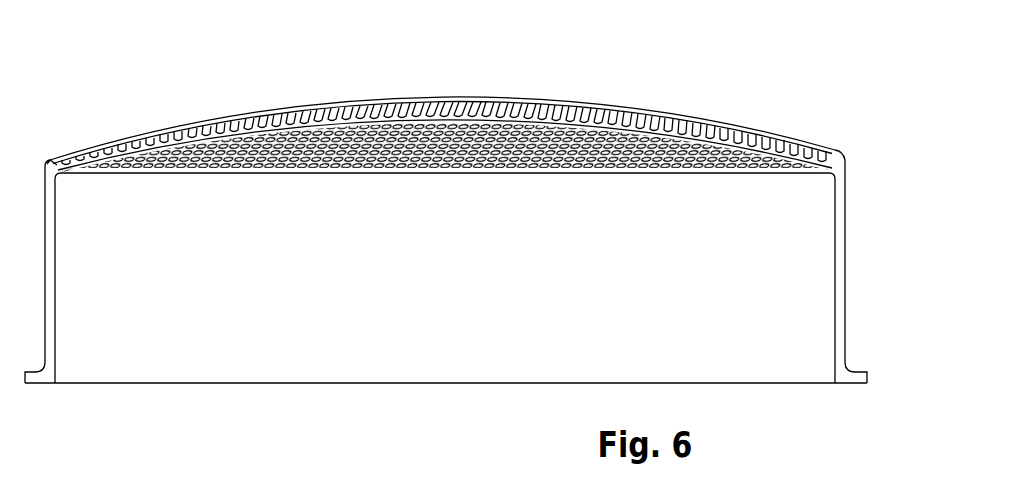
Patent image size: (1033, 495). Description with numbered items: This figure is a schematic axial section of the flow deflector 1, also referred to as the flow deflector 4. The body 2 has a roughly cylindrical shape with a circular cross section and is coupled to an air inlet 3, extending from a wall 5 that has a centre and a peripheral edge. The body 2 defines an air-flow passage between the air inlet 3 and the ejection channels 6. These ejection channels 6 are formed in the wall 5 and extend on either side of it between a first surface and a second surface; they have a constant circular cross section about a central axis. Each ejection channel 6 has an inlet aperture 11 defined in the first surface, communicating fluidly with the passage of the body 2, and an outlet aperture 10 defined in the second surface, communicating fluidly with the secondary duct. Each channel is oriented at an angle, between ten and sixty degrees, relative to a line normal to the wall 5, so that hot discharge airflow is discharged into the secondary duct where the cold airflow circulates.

The flow deflector 1 is at (650, 62).
The body 2 is at (840, 250).
The air inlet 3 is at (466, 388).
The flow deflector 4 is at (513, 98).
The wall 5 is at (50, 155).
The ejection channels 6 is at (771, 130).
The outlet aperture 10 is at (88, 150).
The inlet aperture 11 is at (95, 172).